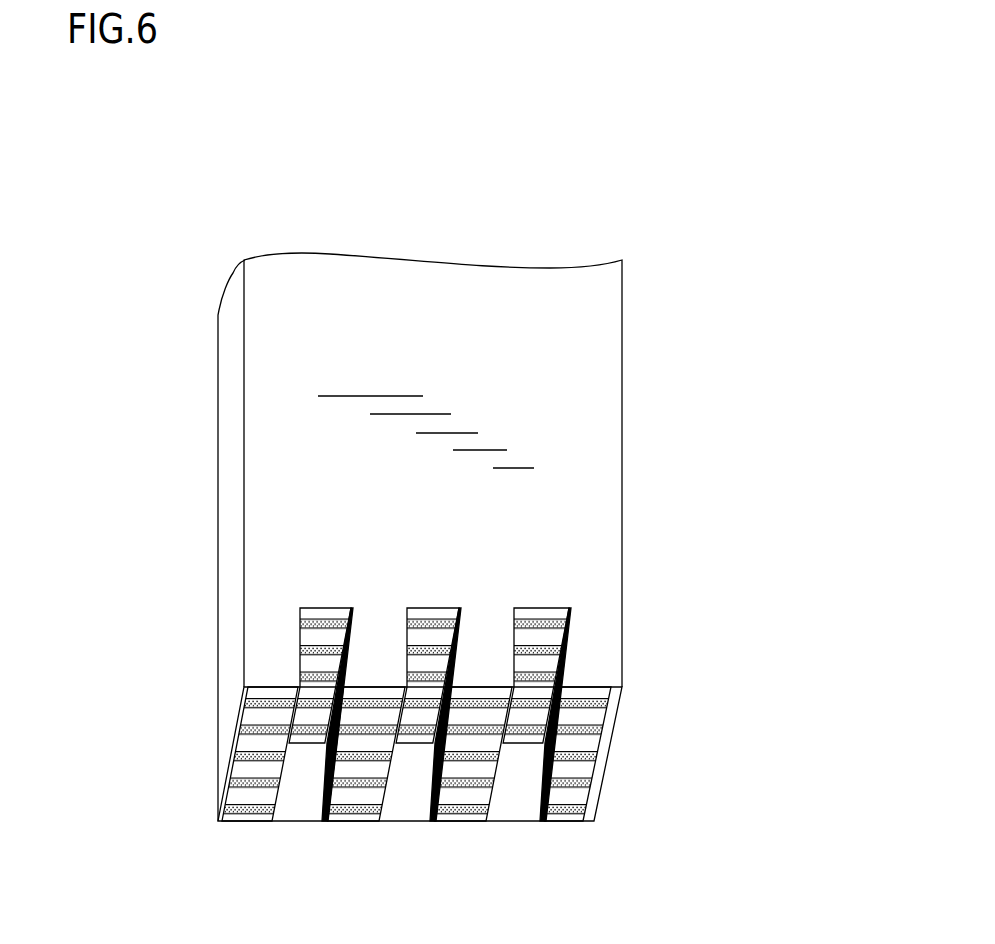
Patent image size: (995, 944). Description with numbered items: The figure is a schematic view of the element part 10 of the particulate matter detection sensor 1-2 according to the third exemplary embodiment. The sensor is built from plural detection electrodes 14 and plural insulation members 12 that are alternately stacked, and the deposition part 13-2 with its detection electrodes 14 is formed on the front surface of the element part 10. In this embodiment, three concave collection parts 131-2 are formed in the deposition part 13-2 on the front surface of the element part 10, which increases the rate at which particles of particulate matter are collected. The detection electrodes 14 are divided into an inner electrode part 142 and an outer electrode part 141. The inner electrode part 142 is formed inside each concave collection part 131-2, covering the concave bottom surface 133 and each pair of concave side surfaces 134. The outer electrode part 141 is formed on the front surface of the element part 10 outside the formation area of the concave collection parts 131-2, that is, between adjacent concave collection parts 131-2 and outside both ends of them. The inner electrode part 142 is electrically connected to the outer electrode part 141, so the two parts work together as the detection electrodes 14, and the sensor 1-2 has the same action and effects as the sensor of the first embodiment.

The particulate matter detection sensor 1-2 is at (607, 237).
The element part 10 is at (420, 531).
The insulation member 12 is at (217, 821).
The deposition part 13-2 is at (249, 826).
The concave collection part 131-2 is at (302, 814).
The concave bottom surface 133 is at (322, 634).
The concave side surface 134 is at (333, 781).
The detection electrode 14 is at (420, 756).
The outer electrode part 141 is at (247, 766).
The inner electrode part 142 is at (533, 678).